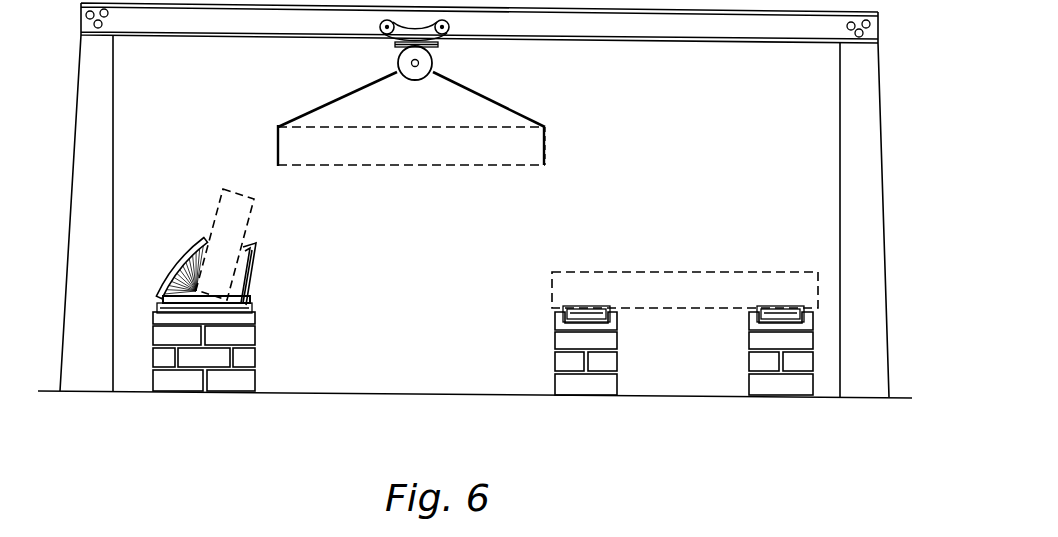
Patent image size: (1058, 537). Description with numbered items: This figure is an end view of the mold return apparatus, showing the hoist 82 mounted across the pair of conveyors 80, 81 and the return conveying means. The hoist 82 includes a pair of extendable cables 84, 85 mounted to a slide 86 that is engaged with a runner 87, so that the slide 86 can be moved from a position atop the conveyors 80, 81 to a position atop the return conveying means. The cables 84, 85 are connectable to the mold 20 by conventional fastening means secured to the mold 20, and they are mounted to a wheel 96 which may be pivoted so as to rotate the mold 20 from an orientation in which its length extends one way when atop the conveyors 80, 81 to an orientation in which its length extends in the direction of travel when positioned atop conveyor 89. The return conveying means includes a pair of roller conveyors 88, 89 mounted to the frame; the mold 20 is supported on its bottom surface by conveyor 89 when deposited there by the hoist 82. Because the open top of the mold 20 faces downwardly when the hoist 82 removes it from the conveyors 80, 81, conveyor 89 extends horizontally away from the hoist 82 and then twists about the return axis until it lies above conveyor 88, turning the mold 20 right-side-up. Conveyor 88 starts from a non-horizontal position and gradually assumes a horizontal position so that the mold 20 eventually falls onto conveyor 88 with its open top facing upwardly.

The mold 20 is at (422, 166).
The conveyor 80 is at (556, 320).
The conveyor 81 is at (748, 318).
The hoist 82 is at (487, 200).
The extendable cable 84 is at (342, 99).
The extendable cable 85 is at (512, 104).
The slide 86 is at (450, 33).
The runner 87 is at (770, 43).
The roller conveyor 88 is at (257, 272).
The roller conveyor 89 is at (173, 262).
The wheel 96 is at (399, 62).